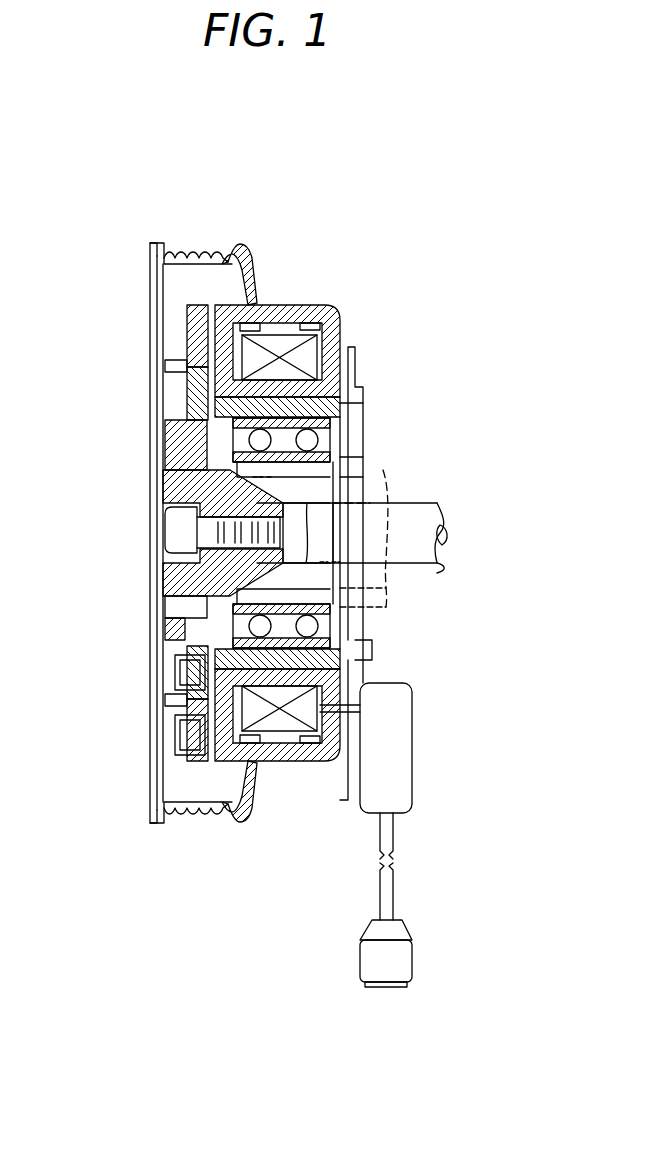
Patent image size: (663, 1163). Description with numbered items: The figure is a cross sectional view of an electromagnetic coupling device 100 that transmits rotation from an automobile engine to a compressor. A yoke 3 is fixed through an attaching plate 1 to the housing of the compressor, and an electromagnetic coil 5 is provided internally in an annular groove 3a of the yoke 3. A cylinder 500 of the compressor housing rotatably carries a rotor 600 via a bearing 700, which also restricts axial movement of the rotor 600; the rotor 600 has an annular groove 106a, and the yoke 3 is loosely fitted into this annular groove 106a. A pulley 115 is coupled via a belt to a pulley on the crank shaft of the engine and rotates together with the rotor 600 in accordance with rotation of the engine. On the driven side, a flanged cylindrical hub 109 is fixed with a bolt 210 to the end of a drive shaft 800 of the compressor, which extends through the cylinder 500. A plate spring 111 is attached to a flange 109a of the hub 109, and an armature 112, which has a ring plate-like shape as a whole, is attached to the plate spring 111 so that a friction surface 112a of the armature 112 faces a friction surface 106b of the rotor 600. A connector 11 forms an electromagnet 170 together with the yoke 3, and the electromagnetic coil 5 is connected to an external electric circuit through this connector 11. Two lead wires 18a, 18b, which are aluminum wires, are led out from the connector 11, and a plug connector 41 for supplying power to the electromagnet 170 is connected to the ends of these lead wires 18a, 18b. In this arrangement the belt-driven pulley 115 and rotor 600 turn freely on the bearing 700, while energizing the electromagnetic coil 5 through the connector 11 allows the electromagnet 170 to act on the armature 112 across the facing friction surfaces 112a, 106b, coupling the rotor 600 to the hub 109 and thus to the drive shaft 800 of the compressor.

The electromagnetic coupling device 100 is at (412, 241).
The pulley 115 is at (148, 278).
The friction surface 106b is at (197, 330).
The annular groove 106a is at (257, 325).
The armature 112 is at (178, 322).
The friction surface 112a is at (200, 352).
The electromagnetic coil 5 is at (285, 348).
The annular groove 3a is at (325, 320).
The rotor 600 is at (356, 308).
The yoke 3 is at (361, 327).
The electromagnet 170 is at (411, 345).
The attaching plate 1 is at (378, 362).
The bearing 700 is at (330, 407).
The cylinder 500 is at (383, 470).
The drive shaft 800 is at (437, 573).
The hub 109 is at (143, 476).
The bolt 210 is at (170, 535).
The flange 109a is at (170, 630).
The plate spring 111 is at (180, 700).
The connector 11 is at (412, 742).
The lead wire 18a is at (398, 872).
The lead wire 18b is at (386, 891).
The plug connector 41 is at (412, 955).